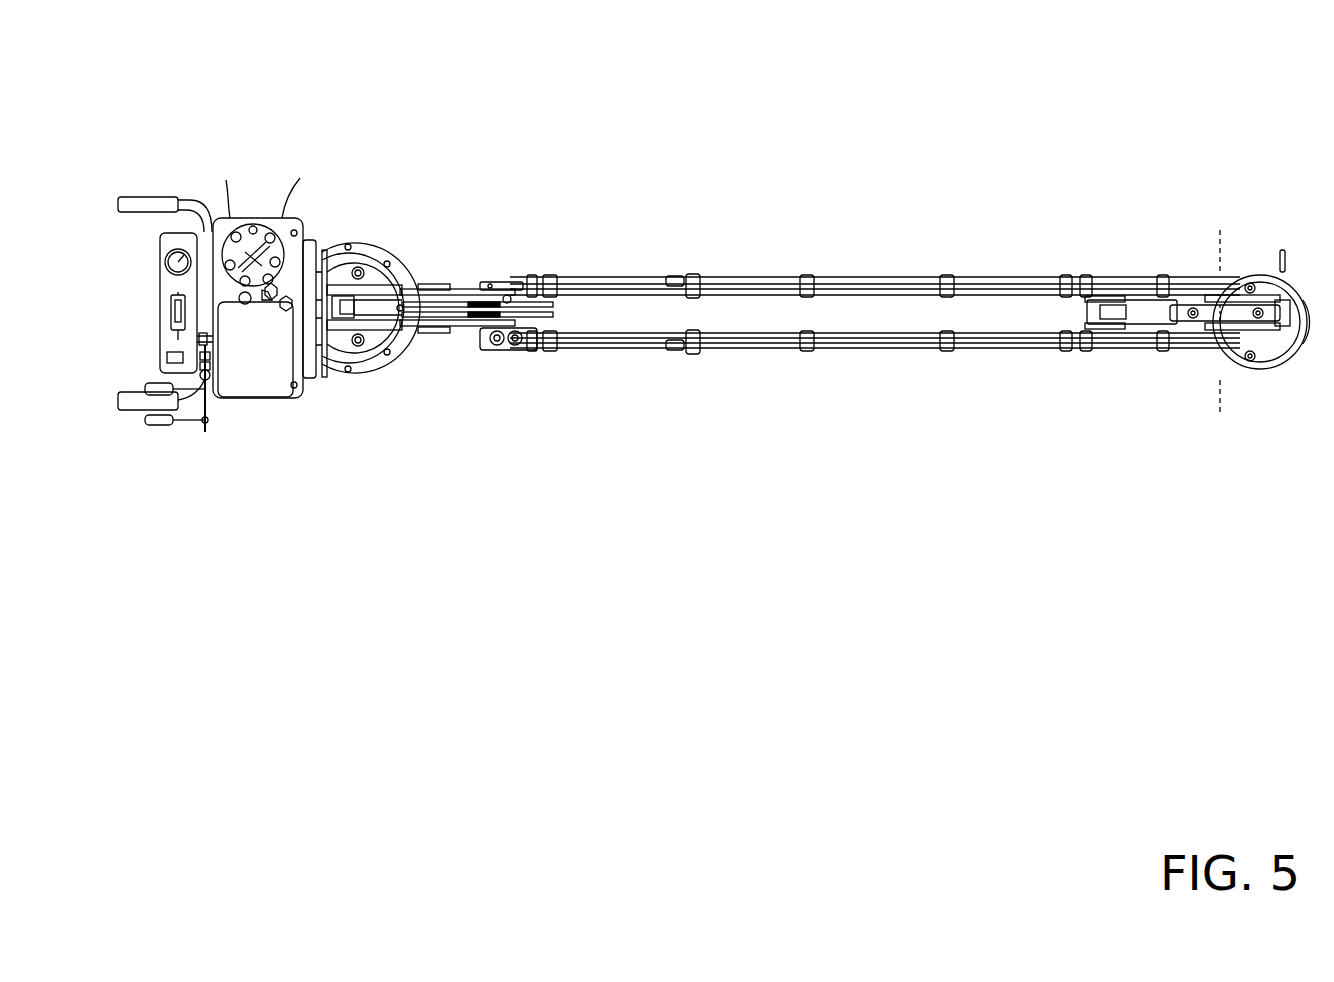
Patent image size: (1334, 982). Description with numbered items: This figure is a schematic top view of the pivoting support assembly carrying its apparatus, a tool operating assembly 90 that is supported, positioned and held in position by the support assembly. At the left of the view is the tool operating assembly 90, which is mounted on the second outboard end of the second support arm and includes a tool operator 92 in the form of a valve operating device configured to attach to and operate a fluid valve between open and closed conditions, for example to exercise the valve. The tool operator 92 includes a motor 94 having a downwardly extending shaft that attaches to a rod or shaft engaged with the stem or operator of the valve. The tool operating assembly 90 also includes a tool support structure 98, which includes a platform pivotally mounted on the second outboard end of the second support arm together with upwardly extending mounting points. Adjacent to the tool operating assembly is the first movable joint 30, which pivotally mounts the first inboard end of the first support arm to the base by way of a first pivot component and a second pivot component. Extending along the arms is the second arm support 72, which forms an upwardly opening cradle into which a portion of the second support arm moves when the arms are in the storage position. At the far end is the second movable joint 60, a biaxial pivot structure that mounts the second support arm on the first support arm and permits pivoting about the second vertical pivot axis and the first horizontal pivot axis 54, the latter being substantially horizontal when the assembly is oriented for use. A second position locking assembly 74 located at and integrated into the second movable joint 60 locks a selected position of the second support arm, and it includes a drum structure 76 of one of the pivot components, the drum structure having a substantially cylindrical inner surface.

The tool operating assembly 90 is at (288, 112).
The motor 94 is at (230, 220).
The tool support structure 98 is at (283, 220).
The tool operator 92 is at (243, 413).
The first movable joint 30 is at (367, 220).
The second arm support 72 is at (432, 285).
The second position locking assembly 74 is at (1248, 258).
The first horizontal pivot axis 54 is at (1220, 393).
The drum structure 76 is at (1260, 380).
The second movable joint 60 is at (1291, 400).